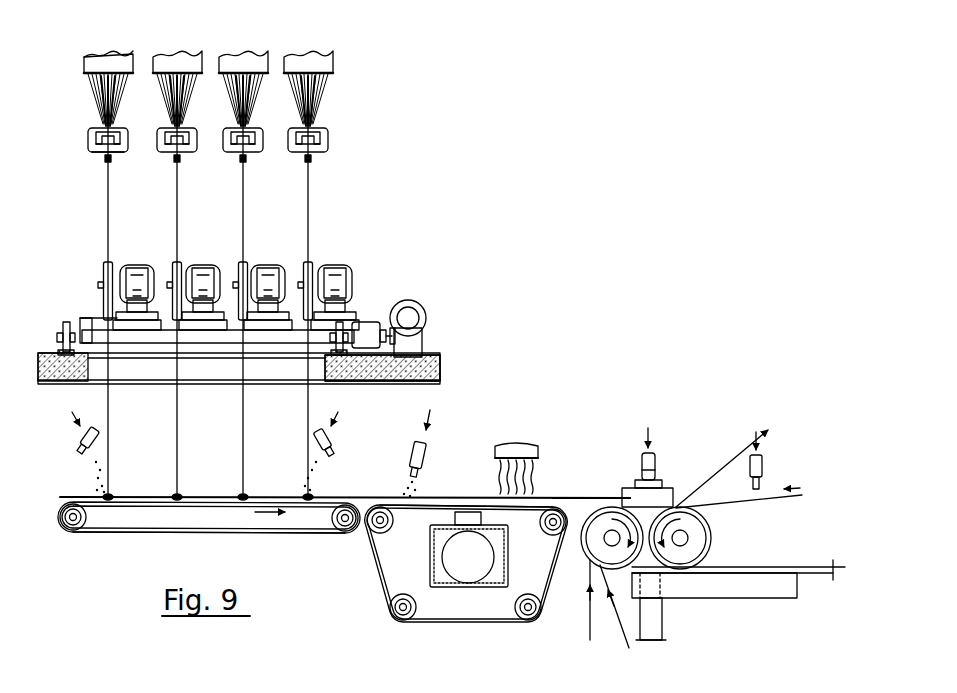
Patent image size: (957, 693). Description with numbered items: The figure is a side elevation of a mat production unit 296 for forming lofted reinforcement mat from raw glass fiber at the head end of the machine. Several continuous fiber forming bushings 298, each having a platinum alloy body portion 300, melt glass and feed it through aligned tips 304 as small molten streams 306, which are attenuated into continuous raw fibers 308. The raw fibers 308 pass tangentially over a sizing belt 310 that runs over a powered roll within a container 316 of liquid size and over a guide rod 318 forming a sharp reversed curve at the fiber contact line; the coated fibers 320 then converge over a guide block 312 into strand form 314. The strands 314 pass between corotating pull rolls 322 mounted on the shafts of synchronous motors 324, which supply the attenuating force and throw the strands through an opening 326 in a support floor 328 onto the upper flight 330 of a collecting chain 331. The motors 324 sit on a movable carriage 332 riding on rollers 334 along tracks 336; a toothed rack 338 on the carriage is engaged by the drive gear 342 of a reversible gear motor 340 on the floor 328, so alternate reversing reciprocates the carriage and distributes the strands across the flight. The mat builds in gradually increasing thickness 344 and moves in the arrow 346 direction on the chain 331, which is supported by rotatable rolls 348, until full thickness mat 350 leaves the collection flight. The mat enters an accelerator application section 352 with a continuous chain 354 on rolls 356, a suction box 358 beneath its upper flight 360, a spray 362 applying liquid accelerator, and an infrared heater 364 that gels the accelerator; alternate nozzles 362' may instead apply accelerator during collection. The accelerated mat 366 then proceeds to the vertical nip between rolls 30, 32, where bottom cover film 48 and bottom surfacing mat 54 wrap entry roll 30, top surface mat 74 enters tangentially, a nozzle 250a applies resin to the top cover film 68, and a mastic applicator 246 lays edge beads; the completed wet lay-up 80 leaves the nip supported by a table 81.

The mat production unit 296 is at (390, 218).
The continuous fiber forming bushing 298 is at (95, 56).
The body portion 300 is at (86, 60).
The molten glass feed tips 304 is at (90, 74).
The molten stream 306 is at (127, 75).
The raw fibers 308 is at (100, 88).
The sizing belt 310 is at (99, 151).
The guide block 312 is at (104, 158).
The strands 314 is at (106, 176).
The container 316 is at (90, 128).
The guide rod 318 is at (97, 137).
The coated fibers 320 is at (111, 154).
The pull rolls 322 is at (110, 262).
The synchronous motors 324 is at (158, 253).
The opening 326 is at (192, 386).
The support floor 328 is at (434, 357).
The upper flight 330 is at (113, 507).
The collecting chain 331 is at (134, 533).
The movable carriage 332 is at (86, 322).
The rollers 334 is at (63, 333).
The tracks 336 is at (60, 351).
The toothed rack 338 is at (366, 322).
The reversible gear motor 340 is at (412, 302).
The drive gear 342 is at (378, 358).
The gradually increasing thickness 344 is at (282, 495).
The arrow 346 is at (264, 515).
The rotatable rolls 348 is at (77, 531).
The full thickness mat 350 is at (369, 496).
The accelerator application section 352 is at (397, 480).
The continuous chain 354 is at (420, 622).
The rolls 356 is at (370, 532).
The suction box 358 is at (439, 589).
The upper flight 360 is at (422, 512).
The spray 362 is at (436, 453).
The alternate nozzles 362' is at (210, 452).
The infrared heater 364 is at (516, 443).
The accelerated mat 366 is at (583, 497).
The entry roll 30 is at (614, 505).
The nip roll 32 is at (711, 528).
The mastic applicator 246 is at (630, 478).
The top surface mat 74 is at (739, 453).
The top cover film 68 is at (779, 493).
The nozzle 250a is at (761, 470).
The wet lay-up 80 is at (813, 566).
The table 81 is at (694, 599).
The bottom surfacing mat 54 is at (588, 620).
The bottom cover film 48 is at (620, 636).